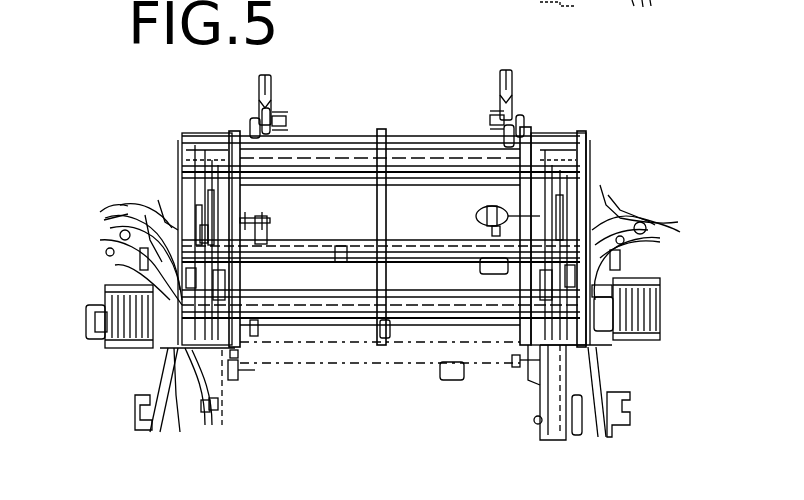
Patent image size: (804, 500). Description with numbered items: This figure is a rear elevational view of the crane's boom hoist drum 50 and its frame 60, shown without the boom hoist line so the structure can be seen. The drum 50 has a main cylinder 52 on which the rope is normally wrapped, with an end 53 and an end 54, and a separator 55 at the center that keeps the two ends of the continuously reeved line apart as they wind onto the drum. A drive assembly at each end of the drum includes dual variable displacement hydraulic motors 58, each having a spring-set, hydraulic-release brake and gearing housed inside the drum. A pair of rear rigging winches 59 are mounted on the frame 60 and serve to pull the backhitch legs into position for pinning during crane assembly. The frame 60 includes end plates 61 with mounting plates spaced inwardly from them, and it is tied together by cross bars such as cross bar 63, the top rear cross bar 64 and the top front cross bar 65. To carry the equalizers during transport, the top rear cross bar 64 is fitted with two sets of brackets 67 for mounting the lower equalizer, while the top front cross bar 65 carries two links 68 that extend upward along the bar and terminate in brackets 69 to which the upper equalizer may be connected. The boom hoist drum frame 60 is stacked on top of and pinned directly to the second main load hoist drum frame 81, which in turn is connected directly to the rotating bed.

The boom hoist drum 50 is at (446, 128).
The main cylinder 52 is at (345, 186).
The end 53 is at (529, 130).
The end 54 is at (229, 136).
The separator 55 is at (384, 133).
The variable displacement hydraulic motors 58 is at (128, 264).
The rear rigging winches 59 is at (105, 331).
The boom hoist drum frame 60 is at (590, 163).
The end plates 61 is at (178, 178).
The cross bar 63 is at (300, 322).
The top rear cross bar 64 is at (350, 264).
The top front cross bar 65 is at (310, 140).
The brackets 67 is at (256, 226).
The links 68 is at (256, 120).
The brackets 69 is at (270, 90).
The second main load hoist drum frame 81 is at (530, 388).